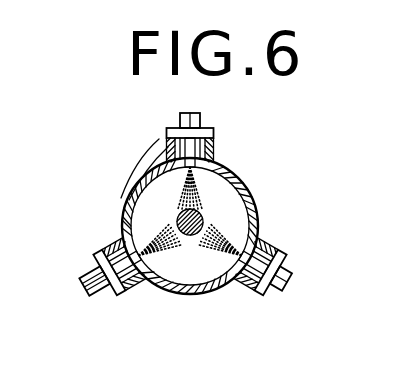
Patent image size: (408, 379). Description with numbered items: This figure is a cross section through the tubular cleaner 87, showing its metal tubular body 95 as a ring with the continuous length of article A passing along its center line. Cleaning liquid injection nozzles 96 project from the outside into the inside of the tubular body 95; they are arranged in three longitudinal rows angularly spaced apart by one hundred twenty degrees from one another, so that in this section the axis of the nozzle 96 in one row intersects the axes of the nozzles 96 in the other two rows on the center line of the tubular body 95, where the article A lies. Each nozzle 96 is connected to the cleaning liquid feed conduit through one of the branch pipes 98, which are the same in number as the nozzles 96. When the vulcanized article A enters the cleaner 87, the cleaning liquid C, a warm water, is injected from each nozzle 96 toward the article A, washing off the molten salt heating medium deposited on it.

The tubular cleaner 87 is at (250, 182).
The tubular body 95 is at (135, 188).
The cleaning liquid injection nozzle 96 is at (207, 157).
The branch pipe 98 is at (178, 122).
The continuous length of article A is at (203, 212).
The cleaning liquid C is at (180, 184).